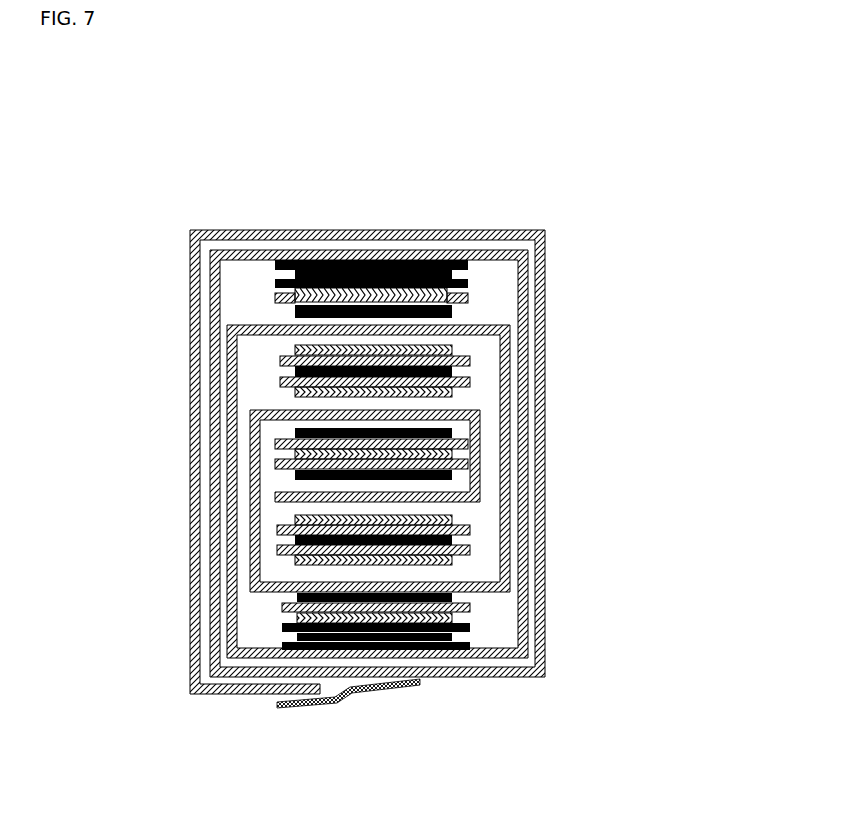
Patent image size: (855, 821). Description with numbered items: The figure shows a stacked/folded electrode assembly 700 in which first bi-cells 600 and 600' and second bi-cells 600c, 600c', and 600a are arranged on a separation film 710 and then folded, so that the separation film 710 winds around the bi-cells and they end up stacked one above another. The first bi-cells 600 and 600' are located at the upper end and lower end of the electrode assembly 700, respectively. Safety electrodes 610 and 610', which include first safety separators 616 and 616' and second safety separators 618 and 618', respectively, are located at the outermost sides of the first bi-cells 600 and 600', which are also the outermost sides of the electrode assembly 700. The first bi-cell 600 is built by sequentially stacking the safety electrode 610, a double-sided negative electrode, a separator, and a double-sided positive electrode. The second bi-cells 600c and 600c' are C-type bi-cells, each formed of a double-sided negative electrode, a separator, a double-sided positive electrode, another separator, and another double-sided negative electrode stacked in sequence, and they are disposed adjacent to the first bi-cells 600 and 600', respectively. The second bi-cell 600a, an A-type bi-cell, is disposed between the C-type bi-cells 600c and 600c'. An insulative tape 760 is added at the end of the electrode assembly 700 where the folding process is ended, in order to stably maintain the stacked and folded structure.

The electrode assembly 700 is at (389, 457).
The separation film 710 is at (515, 677).
The insulative tape 760 is at (327, 708).
The first bi-cell 600 is at (402, 251).
The second bi-cell 600c is at (505, 366).
The second bi-cell 600a is at (470, 447).
The second bi-cell 600c' is at (505, 535).
The first bi-cell 600' is at (395, 663).
The safety electrode 610 is at (267, 284).
The first safety separator 616 is at (405, 203).
The second safety separator 618 is at (292, 322).
The safety electrode 610' is at (419, 686).
The first safety separator 616' is at (267, 662).
The second safety separator 618' is at (282, 609).